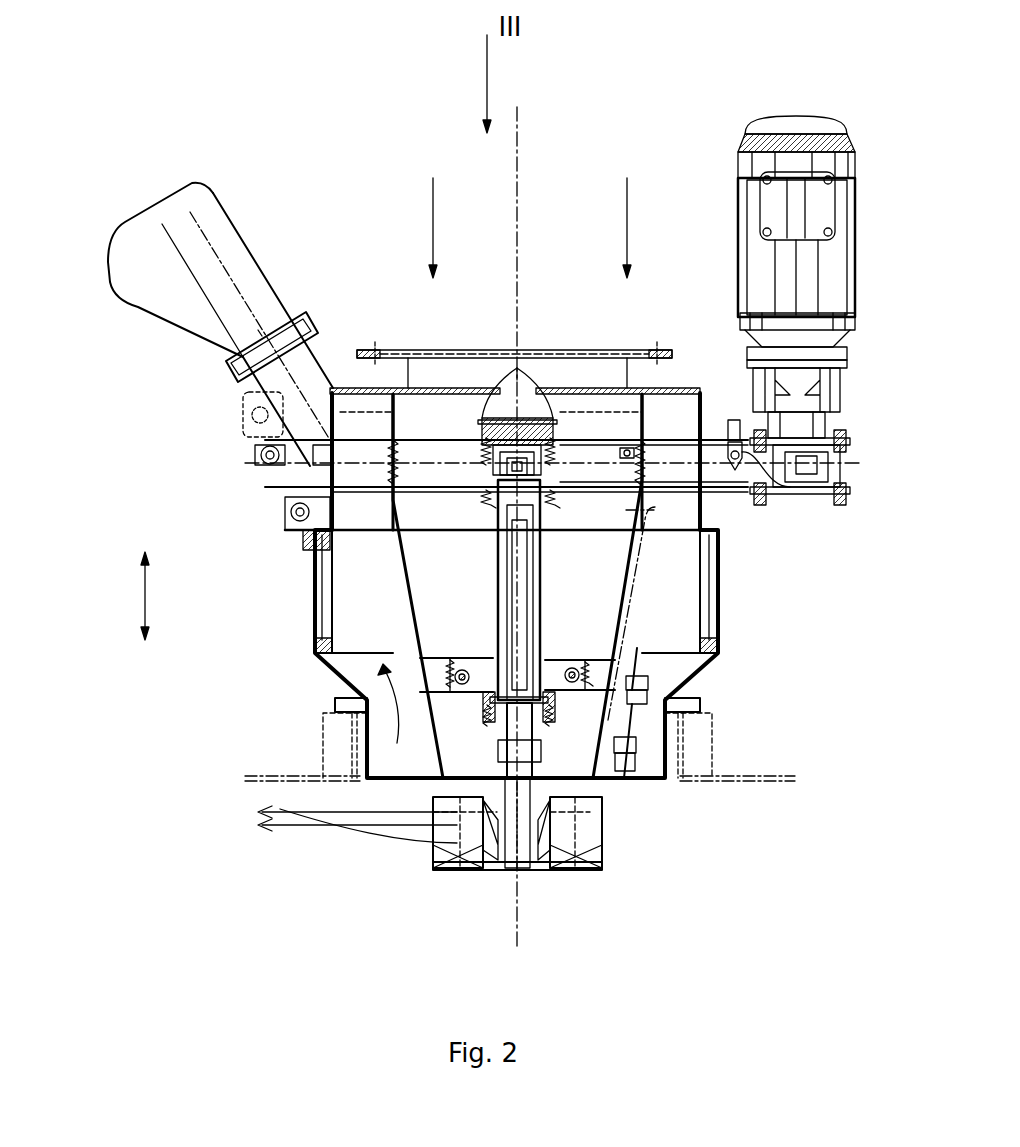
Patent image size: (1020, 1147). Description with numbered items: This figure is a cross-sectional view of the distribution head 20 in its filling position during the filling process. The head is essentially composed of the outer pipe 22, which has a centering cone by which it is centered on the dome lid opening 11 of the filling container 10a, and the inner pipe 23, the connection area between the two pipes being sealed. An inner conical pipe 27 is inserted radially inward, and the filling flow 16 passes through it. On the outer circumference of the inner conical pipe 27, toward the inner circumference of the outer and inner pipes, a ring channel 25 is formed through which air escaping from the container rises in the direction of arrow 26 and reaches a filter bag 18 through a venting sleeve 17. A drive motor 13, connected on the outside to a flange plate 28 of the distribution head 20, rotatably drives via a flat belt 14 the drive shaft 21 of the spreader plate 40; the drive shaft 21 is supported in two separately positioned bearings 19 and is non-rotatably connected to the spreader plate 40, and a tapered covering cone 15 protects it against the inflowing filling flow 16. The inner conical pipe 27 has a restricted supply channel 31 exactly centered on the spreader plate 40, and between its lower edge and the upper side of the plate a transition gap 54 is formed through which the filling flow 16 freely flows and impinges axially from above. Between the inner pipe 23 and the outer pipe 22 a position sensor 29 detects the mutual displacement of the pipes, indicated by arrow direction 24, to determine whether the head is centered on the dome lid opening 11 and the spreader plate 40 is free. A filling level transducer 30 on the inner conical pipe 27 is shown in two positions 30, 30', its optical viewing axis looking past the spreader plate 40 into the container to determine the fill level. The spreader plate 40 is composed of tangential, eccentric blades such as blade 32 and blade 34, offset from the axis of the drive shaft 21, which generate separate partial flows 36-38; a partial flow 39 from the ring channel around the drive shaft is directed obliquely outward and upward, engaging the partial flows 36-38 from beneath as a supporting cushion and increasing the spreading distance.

The filling container 10a is at (517, 978).
The dome lid opening 11 is at (368, 748).
The drive motor 13 is at (763, 215).
The flat belt 14 is at (677, 472).
The covering cone 15 is at (527, 397).
The filling flow 16 is at (433, 236).
The venting sleeve 17 is at (268, 447).
The filter bag 18 is at (238, 253).
The bearing 19 is at (476, 500).
The distribution head 20 is at (468, 322).
The drive shaft 21 is at (520, 565).
The outer pipe 22 is at (315, 605).
The inner pipe 23 is at (332, 585).
The arrow direction 24 is at (145, 606).
The ring channel 25 is at (338, 643).
The arrow direction 26 is at (368, 700).
The inner conical pipe 27 is at (403, 560).
The flange plate 28 is at (635, 357).
The position sensor 29 is at (290, 510).
The filling level transducer 30 is at (704, 676).
The filling level transducer 30' is at (697, 741).
The supply channel 31 is at (583, 747).
The blade 32 is at (452, 837).
The blade 34 is at (585, 835).
The partial flows 36-38 is at (280, 832).
The partial flow 39 is at (345, 840).
The spreader plate 40 is at (571, 880).
The transition gap 54 is at (488, 720).